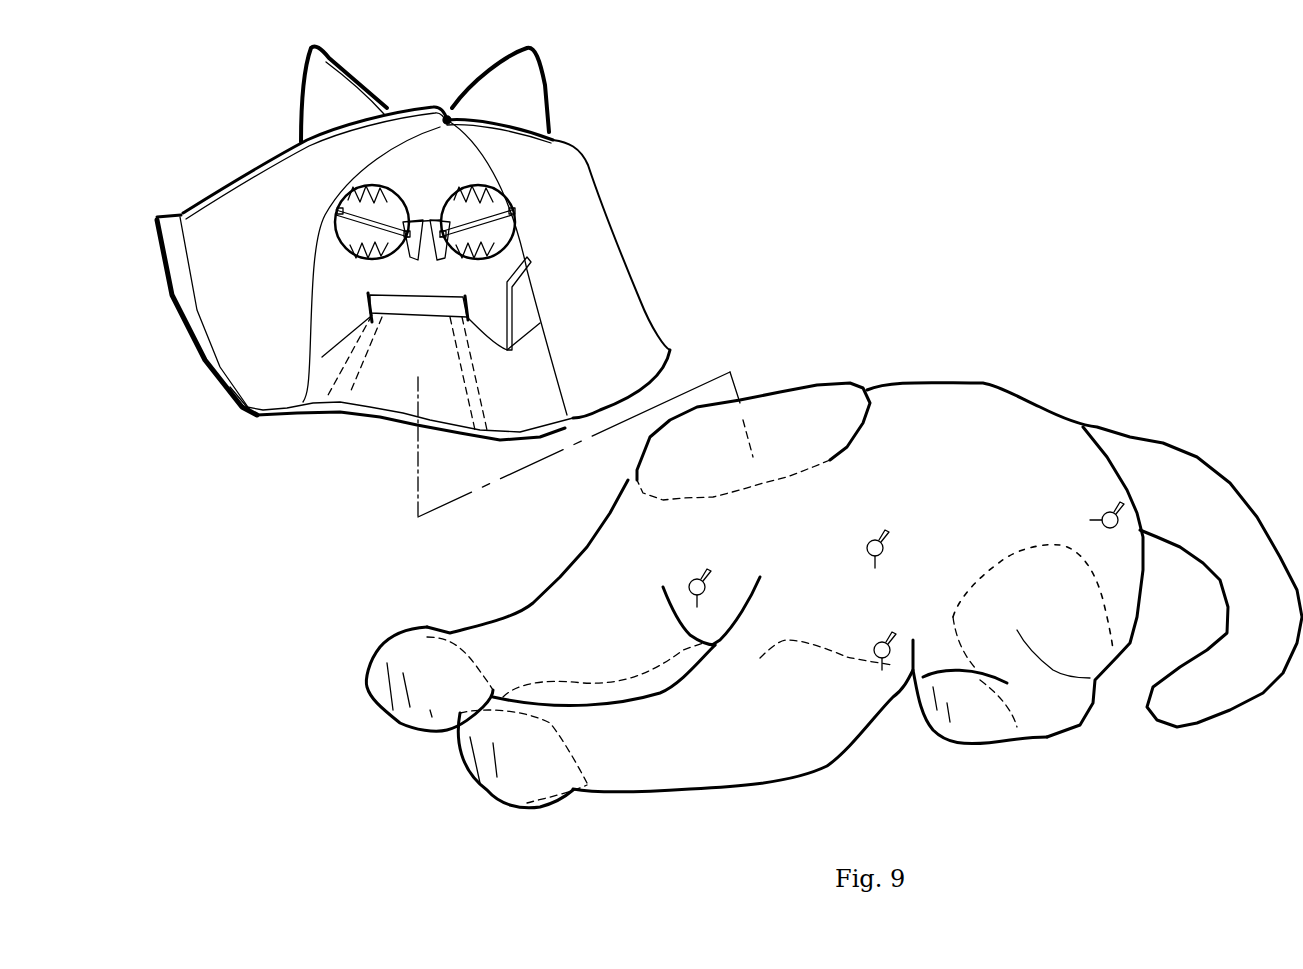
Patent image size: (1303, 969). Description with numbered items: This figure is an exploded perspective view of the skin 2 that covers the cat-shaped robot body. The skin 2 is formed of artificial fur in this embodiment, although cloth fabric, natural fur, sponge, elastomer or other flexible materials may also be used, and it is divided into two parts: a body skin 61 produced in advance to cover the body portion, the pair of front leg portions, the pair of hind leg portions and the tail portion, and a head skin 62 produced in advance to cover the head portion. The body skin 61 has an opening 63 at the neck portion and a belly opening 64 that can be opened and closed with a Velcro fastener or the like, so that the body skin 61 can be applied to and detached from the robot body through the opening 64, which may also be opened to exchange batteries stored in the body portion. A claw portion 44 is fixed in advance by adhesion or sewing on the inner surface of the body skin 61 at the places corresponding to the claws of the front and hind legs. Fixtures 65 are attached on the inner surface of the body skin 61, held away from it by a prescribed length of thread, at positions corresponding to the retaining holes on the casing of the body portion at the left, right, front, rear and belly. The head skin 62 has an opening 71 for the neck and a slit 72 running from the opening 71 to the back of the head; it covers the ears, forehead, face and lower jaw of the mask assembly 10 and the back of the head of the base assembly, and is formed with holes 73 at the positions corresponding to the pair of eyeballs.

The skin 2 is at (805, 197).
The mask assembly 10 is at (540, 300).
The claw portion 44 is at (420, 733).
The body skin 61 is at (990, 383).
The head skin 62 is at (551, 138).
The opening 63 is at (798, 407).
The opening 64 is at (847, 657).
The fixture 65 is at (893, 537).
The opening 71 is at (368, 415).
The slit 72 is at (240, 177).
The holes 73 is at (345, 207).